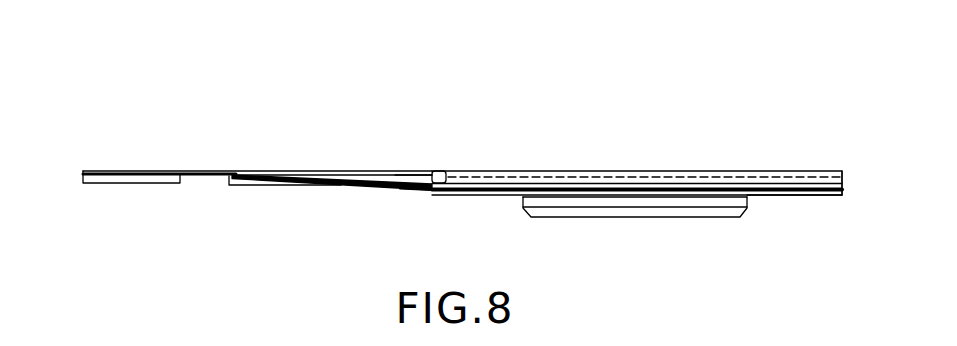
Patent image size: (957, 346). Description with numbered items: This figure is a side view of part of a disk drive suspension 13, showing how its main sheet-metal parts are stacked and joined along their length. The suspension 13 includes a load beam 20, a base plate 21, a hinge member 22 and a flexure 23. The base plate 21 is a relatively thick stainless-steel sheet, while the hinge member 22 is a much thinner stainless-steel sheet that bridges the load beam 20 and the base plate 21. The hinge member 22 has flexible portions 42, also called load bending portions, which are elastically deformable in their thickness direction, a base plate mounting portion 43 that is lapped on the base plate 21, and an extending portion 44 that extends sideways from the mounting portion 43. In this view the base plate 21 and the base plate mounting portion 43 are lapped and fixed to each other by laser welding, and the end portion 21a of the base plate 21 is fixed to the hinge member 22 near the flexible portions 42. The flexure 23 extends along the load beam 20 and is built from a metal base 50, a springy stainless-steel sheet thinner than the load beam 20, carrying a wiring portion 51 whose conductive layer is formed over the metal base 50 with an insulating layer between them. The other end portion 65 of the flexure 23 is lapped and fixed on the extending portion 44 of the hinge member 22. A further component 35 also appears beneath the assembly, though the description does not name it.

The suspension 13 is at (302, 97).
The load beam 20 is at (147, 184).
The base plate 21 is at (298, 188).
The end portion of the base plate 21a is at (245, 187).
The hinge member 22 is at (461, 165).
The flexure 23 is at (415, 180).
The cover member 35 is at (640, 219).
The flexible portions 42 is at (201, 170).
The base plate mounting portion 43 is at (595, 171).
The extending portion 44 is at (802, 197).
The metal base 50 is at (412, 192).
The wiring portion 51 is at (450, 181).
The end portion of the flexure 65 is at (799, 192).